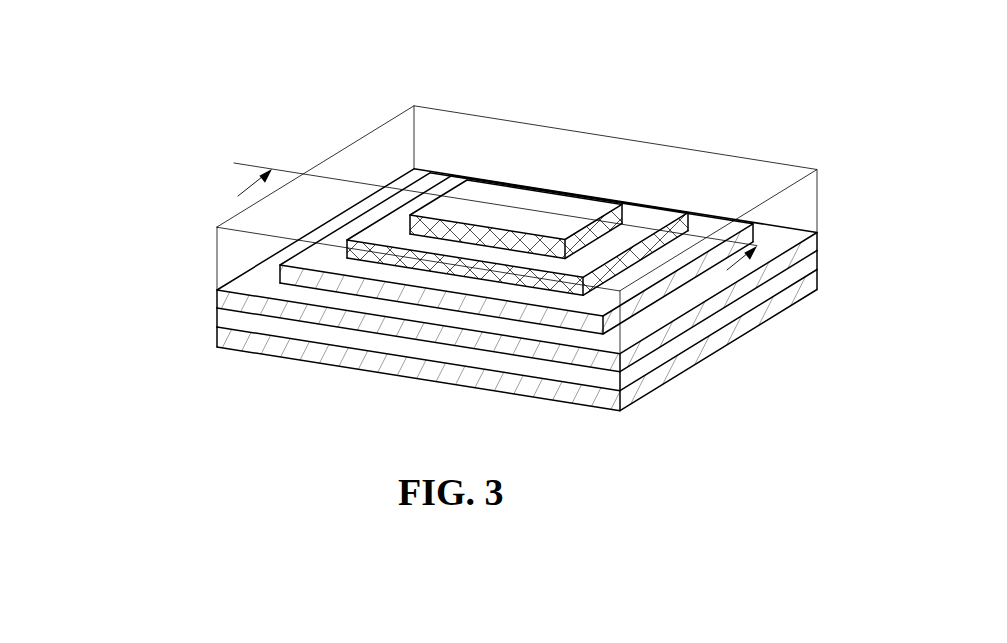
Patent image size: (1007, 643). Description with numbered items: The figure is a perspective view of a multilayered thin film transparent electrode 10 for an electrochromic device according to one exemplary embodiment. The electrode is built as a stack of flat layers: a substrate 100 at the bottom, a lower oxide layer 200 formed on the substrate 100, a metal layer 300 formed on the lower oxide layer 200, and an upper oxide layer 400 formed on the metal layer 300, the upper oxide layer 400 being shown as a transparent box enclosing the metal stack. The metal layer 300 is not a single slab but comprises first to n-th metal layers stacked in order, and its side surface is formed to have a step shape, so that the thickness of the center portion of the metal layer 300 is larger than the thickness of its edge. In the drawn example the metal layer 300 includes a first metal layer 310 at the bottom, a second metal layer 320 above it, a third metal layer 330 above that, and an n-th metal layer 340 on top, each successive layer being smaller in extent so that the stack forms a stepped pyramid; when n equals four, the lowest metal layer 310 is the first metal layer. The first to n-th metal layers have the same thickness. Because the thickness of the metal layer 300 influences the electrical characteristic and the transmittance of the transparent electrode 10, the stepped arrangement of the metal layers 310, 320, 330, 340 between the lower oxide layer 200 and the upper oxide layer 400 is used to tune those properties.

The multilayered thin film transparent electrode 10 is at (763, 87).
The substrate 100 is at (277, 357).
The lower oxide layer 200 is at (258, 329).
The metal layer 300 is at (128, 203).
The n-3-th metal layer 310 is at (217, 290).
The n-2-th metal layer 320 is at (280, 265).
The n-1-th metal layer 330 is at (347, 240).
The n-th metal layer 340 is at (410, 215).
The upper oxide layer 400 is at (372, 132).